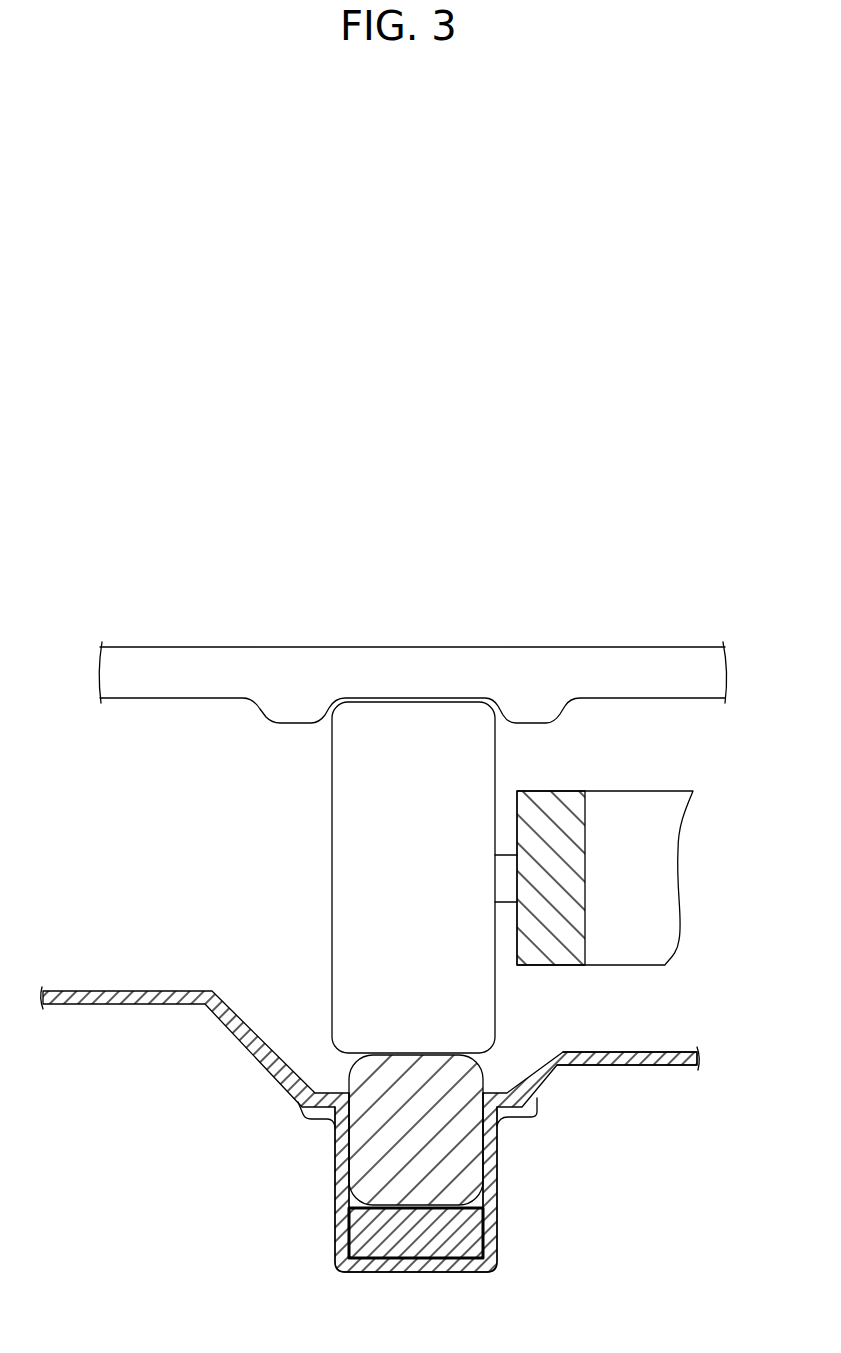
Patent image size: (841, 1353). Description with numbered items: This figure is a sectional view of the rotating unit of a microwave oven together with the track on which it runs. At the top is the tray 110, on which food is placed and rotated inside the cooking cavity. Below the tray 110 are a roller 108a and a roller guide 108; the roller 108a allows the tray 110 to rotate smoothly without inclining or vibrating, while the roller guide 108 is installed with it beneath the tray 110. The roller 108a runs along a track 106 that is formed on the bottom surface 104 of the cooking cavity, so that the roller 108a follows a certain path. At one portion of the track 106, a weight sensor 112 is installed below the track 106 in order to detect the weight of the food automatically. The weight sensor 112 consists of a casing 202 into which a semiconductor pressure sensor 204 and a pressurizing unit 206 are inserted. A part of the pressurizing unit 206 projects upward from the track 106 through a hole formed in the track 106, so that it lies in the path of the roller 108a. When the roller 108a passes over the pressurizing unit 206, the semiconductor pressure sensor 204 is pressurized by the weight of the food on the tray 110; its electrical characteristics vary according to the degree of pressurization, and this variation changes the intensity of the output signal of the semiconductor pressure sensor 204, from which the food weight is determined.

The tray 110 is at (413, 668).
The roller 108a is at (365, 846).
The roller guide 108 is at (650, 873).
The track 106 is at (320, 1031).
The bottom surface 104 is at (637, 1066).
The weight sensor 112 is at (500, 1196).
The pressurizing unit 206 is at (377, 1160).
The casing 202 is at (342, 1228).
The semiconductor pressure sensor 204 is at (475, 1238).